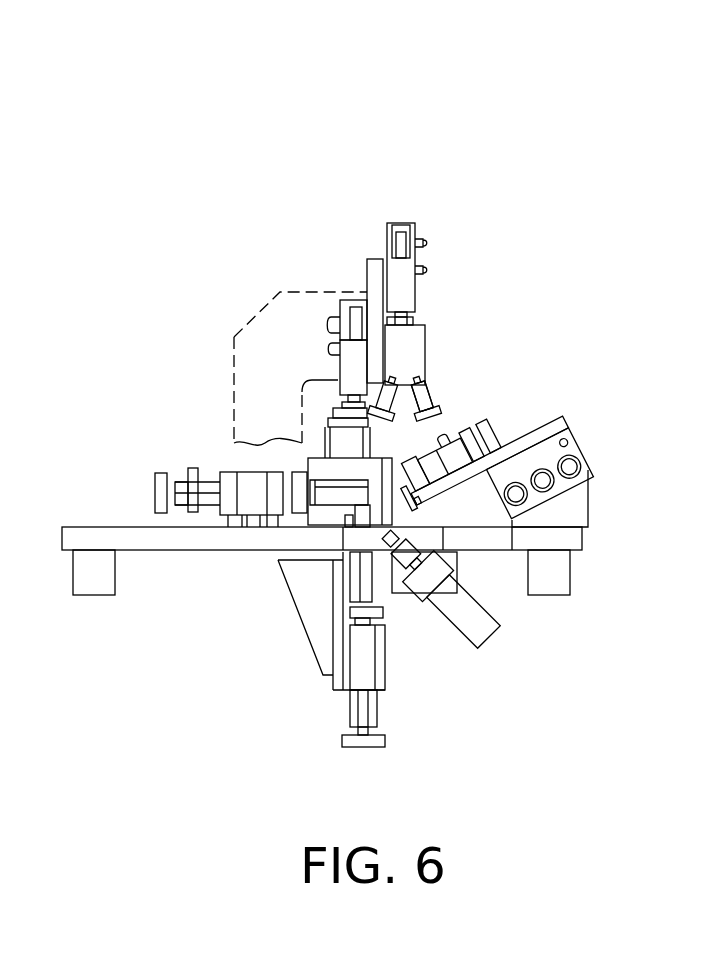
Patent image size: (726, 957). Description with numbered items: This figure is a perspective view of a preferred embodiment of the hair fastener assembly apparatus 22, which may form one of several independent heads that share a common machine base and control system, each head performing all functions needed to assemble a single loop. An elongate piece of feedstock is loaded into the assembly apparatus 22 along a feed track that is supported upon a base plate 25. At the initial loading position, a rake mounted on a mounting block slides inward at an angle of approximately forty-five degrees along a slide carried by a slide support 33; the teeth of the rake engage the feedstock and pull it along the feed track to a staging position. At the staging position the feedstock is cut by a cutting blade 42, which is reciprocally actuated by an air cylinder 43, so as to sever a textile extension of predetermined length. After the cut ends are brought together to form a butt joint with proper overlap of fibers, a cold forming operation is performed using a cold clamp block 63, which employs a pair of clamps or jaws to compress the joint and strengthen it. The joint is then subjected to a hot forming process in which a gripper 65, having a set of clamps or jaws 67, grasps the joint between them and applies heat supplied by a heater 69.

The assembly apparatus 22 is at (583, 144).
The base plate 25 is at (582, 540).
The slide support 33 is at (588, 508).
The cutting blade 42 is at (365, 508).
The air cylinder 43 is at (490, 637).
The cold clamp block 63 is at (328, 427).
The gripper 65 is at (426, 348).
The clamps or jaws 67 is at (437, 395).
The heater 69 is at (422, 396).